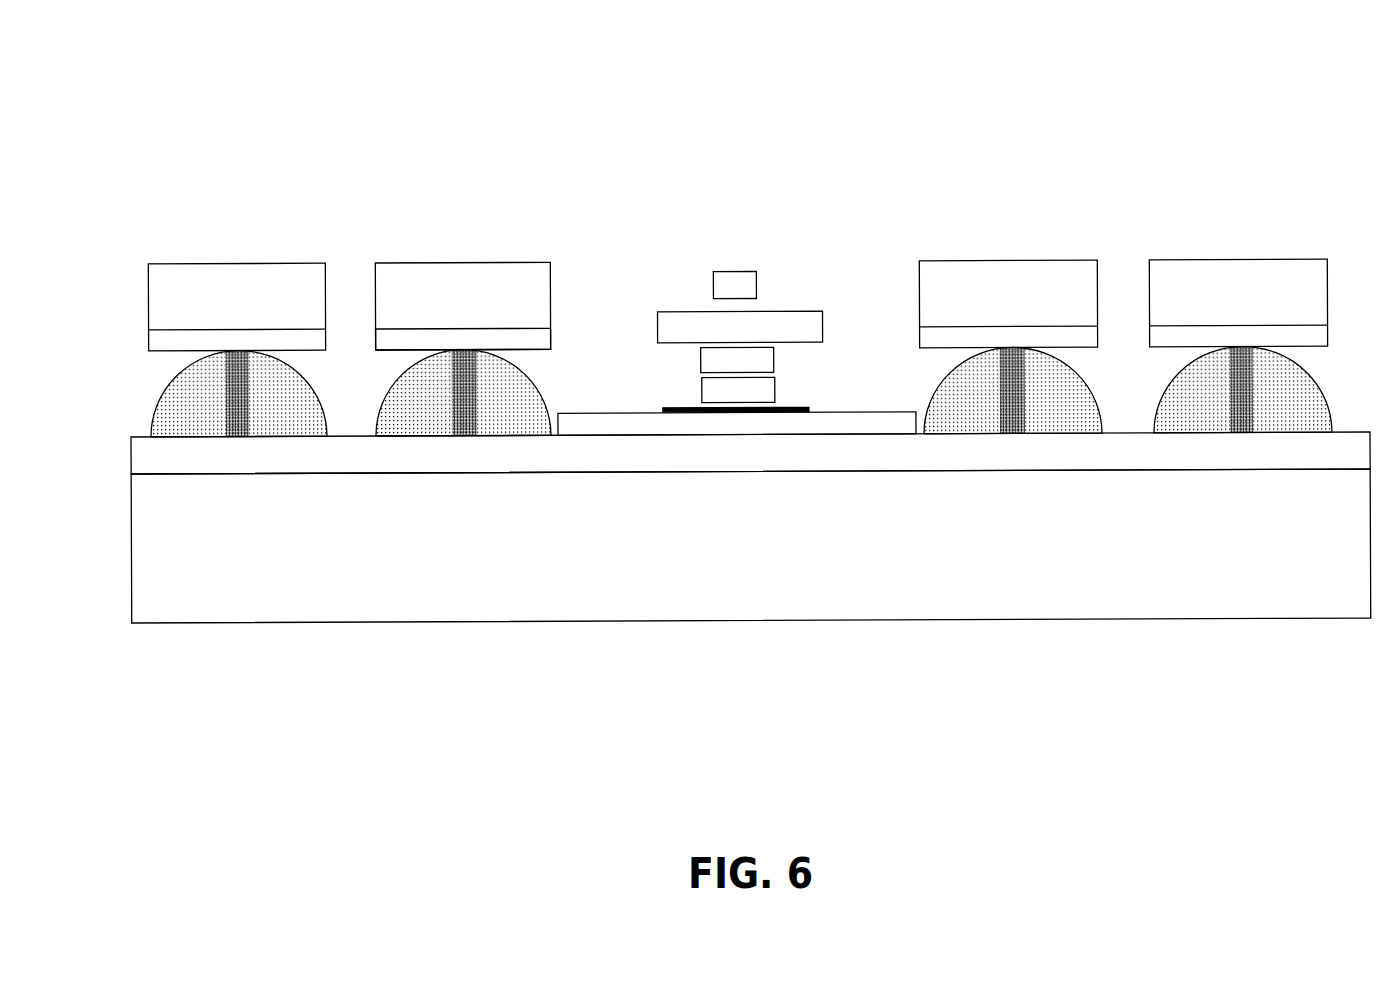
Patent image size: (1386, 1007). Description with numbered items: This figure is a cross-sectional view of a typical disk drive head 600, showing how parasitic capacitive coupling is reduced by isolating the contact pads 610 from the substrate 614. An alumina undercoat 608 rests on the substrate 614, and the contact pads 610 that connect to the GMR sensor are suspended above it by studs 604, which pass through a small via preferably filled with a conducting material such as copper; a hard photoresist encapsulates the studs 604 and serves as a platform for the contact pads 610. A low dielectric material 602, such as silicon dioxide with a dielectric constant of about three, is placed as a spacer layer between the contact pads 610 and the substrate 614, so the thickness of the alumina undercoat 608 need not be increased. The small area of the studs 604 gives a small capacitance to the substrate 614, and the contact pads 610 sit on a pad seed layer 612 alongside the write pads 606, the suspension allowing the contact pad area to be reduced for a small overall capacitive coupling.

The disk drive head 600 is at (211, 101).
The low dielectric material 602 is at (239, 525).
The studs 604 is at (248, 437).
The write pads 606 is at (394, 249).
The alumina undercoat 608 is at (397, 455).
The contact pads 610 is at (1167, 304).
The pad seed layer 612 is at (540, 344).
The substrate 614 is at (473, 555).